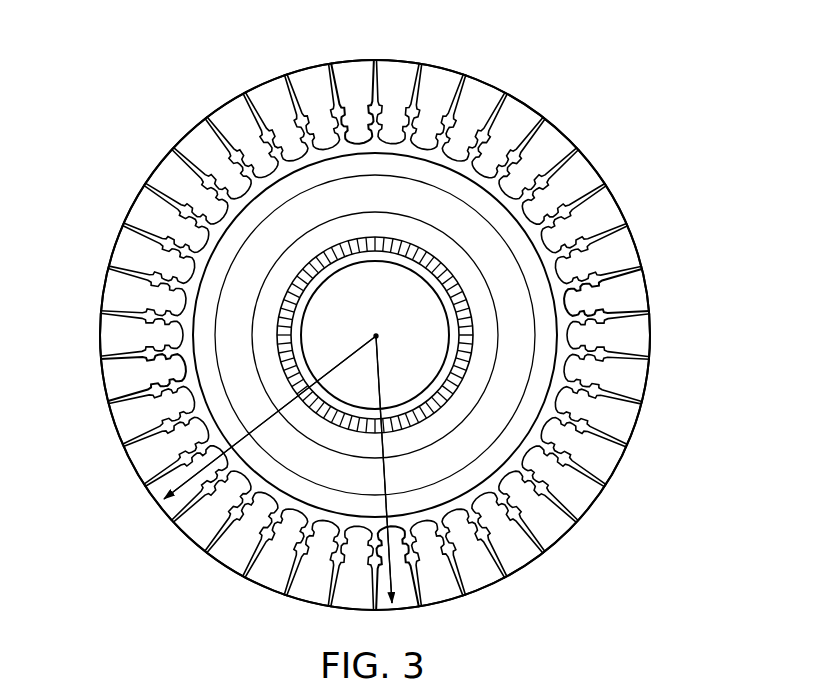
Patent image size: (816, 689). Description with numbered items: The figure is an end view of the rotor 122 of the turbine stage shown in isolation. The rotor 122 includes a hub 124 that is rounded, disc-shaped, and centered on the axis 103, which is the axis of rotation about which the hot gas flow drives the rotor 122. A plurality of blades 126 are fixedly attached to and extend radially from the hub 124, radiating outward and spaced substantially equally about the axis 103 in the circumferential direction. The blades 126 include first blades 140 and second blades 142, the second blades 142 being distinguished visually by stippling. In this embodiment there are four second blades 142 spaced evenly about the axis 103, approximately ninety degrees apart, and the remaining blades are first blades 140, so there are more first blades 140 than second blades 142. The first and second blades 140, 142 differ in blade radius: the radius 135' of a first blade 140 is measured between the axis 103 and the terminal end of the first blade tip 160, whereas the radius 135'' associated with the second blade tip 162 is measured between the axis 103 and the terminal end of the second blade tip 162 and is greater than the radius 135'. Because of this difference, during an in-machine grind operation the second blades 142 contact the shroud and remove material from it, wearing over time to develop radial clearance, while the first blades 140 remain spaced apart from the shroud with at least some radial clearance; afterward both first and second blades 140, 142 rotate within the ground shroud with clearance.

The axis 103 is at (376, 334).
The rotor 122 is at (110, 100).
The hub 124 is at (238, 320).
The blades 126 is at (237, 111).
The radius of the first blade 135' is at (270, 417).
The radius of the second blade 135'' is at (419, 469).
The first blades 140 is at (128, 212).
The second blades 142 is at (345, 60).
The first blade tip 160 is at (645, 244).
The second blade tip 162 is at (657, 293).